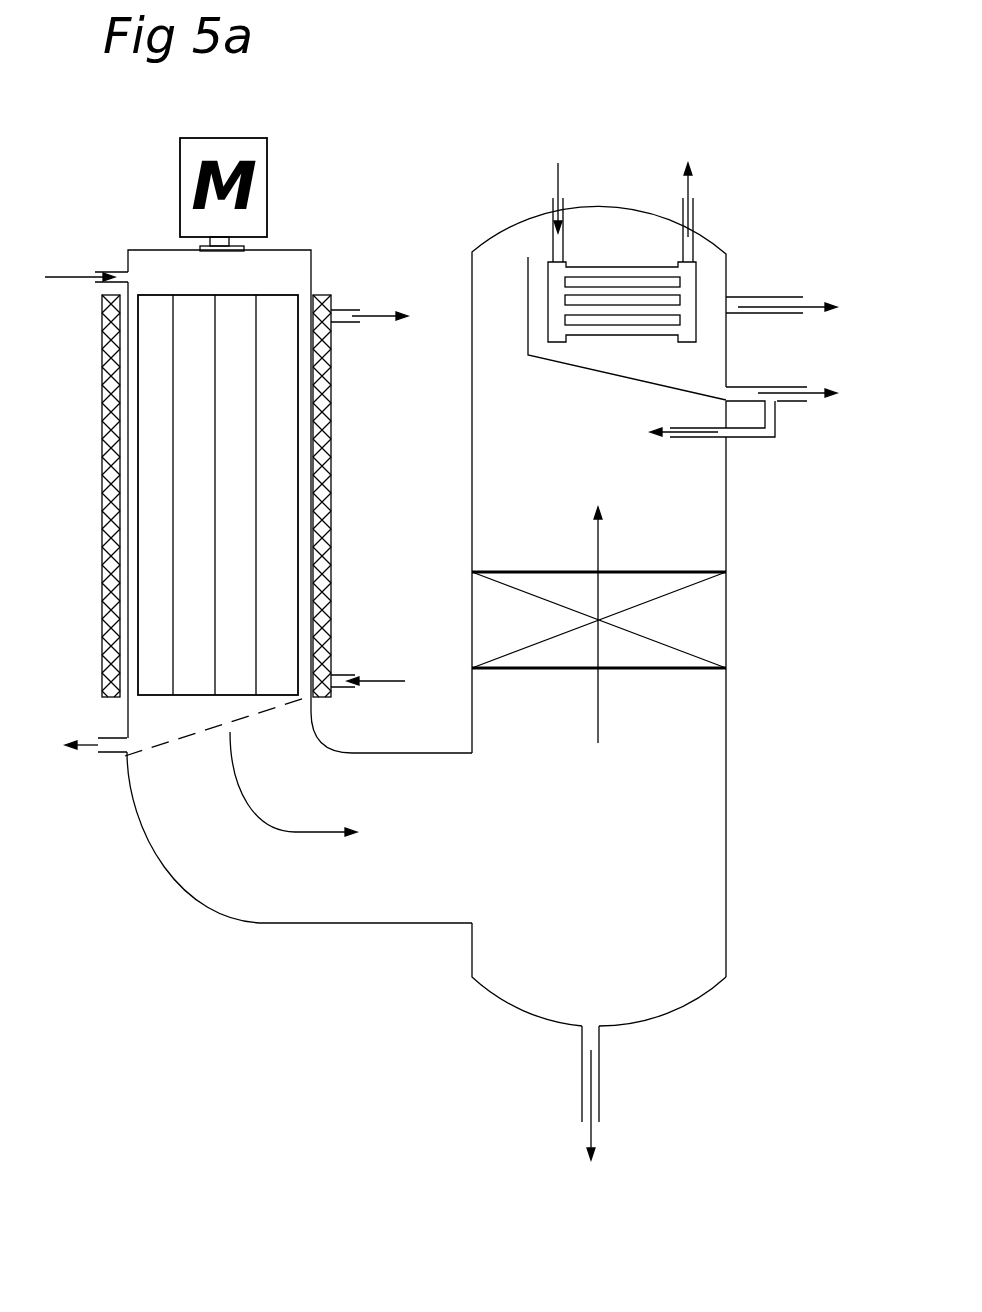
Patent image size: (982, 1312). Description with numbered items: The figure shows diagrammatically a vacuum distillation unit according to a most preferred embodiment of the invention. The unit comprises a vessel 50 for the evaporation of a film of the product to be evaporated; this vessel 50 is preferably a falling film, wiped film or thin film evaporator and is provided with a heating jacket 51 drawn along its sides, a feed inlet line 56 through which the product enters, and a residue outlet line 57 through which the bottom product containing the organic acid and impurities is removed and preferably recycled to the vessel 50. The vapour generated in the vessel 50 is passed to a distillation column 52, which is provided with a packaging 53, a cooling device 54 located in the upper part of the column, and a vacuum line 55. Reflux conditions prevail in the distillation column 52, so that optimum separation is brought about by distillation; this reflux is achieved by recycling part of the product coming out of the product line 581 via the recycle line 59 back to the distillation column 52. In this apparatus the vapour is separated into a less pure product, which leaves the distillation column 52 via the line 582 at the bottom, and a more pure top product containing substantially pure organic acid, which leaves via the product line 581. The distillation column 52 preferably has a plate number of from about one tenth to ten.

The vessel 50 is at (314, 260).
The heating jacket 51 is at (108, 486).
The distillation column 52 is at (507, 233).
The packaging 53 is at (702, 630).
The cooling device 54 is at (695, 215).
The vacuum line 55 is at (773, 297).
The feed inlet line 56 is at (110, 272).
The residue outlet line 57 is at (108, 754).
The recycle line 59 is at (758, 440).
The product line 581 is at (788, 386).
The line 582 is at (599, 1083).